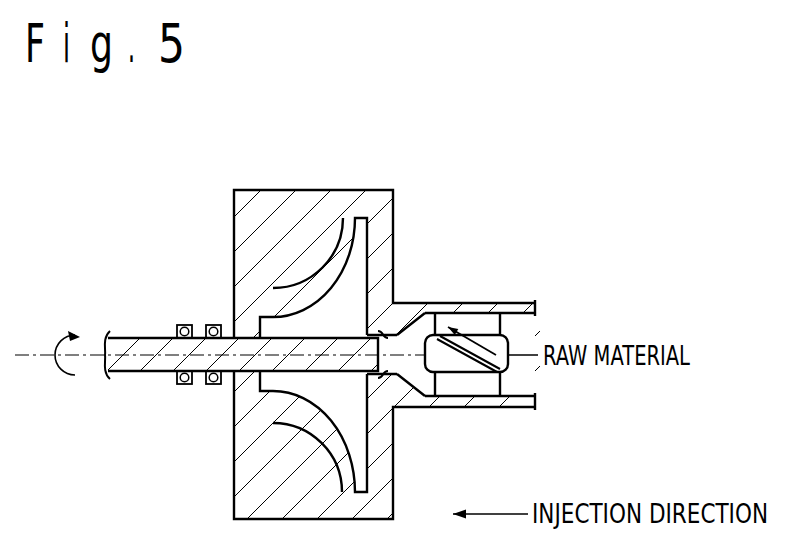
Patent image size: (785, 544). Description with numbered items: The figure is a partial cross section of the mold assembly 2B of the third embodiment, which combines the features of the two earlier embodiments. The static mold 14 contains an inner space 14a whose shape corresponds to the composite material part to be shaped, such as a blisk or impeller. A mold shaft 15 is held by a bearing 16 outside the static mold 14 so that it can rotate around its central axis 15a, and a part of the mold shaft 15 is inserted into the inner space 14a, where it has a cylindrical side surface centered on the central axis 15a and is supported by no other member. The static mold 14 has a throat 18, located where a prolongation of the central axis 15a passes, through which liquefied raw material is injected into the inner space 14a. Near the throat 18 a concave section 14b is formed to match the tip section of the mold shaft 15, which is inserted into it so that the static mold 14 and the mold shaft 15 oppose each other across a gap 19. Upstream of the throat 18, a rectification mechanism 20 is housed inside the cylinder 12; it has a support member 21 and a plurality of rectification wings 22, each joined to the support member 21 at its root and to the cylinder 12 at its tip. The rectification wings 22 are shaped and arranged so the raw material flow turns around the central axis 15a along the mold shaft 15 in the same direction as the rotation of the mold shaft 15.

The mold assembly 2B is at (513, 188).
The cylinder 12 is at (455, 303).
The static mold 14 is at (377, 190).
The inner space 14a is at (358, 278).
The concave section 14b is at (400, 332).
The mold shaft 15 is at (132, 338).
The central axis 15a is at (130, 371).
The bearing 16 is at (214, 324).
The throat 18 is at (417, 385).
The gap 19 is at (370, 336).
The rectification mechanism 20 is at (548, 397).
The support member 21 is at (445, 368).
The rectification wings 22 is at (493, 318).